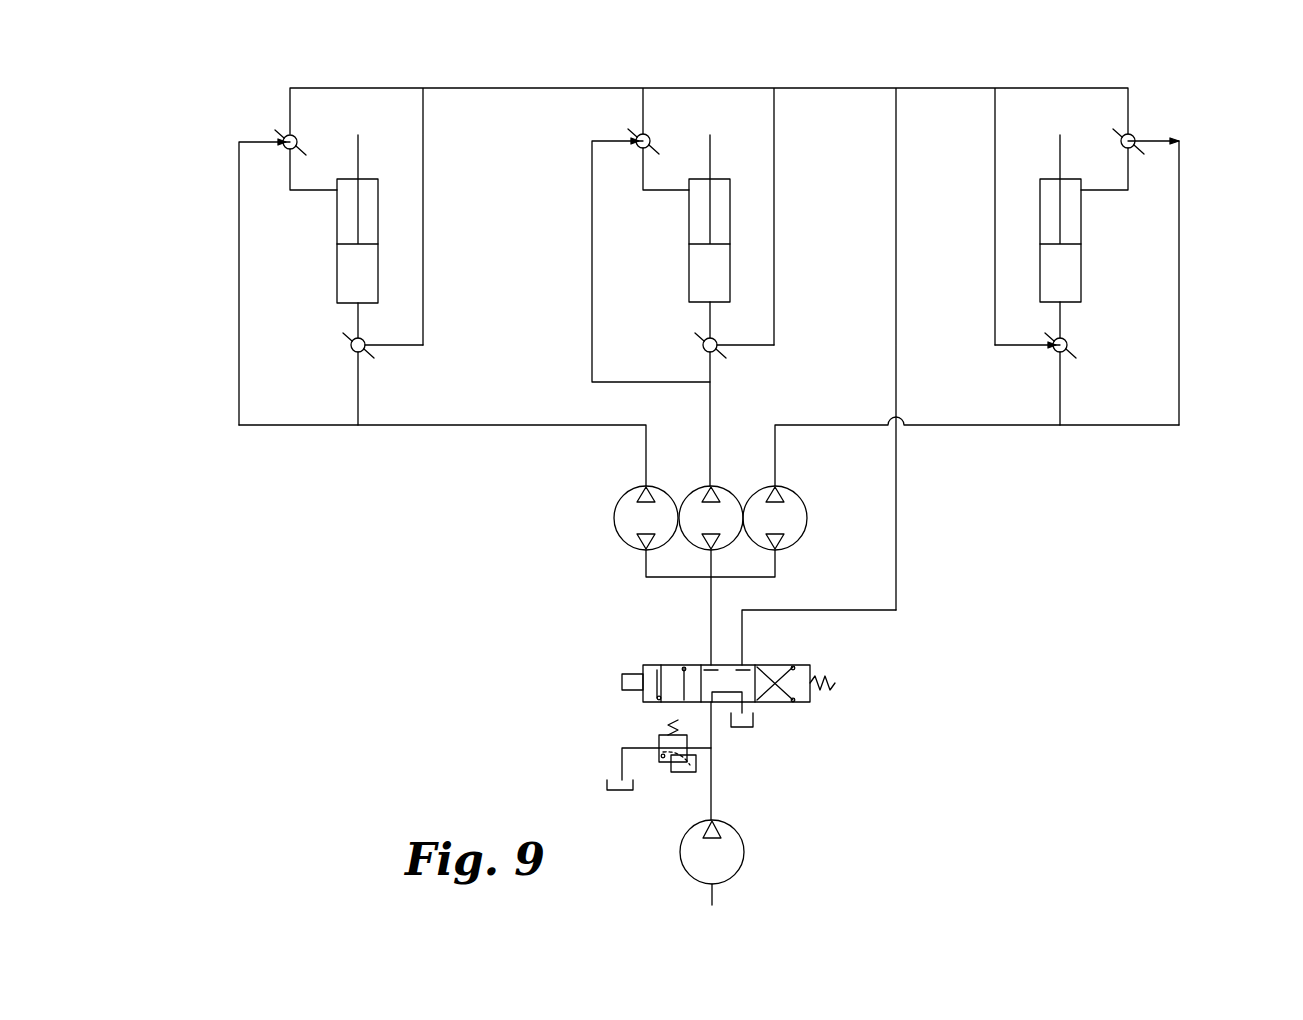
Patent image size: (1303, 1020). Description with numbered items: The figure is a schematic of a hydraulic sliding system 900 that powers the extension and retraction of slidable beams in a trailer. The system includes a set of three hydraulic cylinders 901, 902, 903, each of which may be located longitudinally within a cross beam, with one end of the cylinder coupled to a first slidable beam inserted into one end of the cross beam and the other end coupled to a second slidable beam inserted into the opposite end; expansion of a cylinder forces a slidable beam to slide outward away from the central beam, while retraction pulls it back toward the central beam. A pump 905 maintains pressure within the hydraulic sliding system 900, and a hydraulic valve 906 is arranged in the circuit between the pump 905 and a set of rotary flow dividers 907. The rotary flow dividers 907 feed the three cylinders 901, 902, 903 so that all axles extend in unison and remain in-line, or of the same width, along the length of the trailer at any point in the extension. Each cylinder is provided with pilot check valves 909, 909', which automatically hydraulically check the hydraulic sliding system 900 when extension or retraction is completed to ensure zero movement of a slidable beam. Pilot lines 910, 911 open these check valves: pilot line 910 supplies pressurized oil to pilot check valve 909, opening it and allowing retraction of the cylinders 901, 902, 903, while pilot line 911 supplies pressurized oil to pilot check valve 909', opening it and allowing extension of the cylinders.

The hydraulic sliding system 900 is at (248, 62).
The hydraulic cylinder 901 is at (333, 295).
The hydraulic cylinder 902 is at (685, 295).
The hydraulic cylinder 903 is at (1082, 287).
The pump 905 is at (732, 822).
The hydraulic valve 906 is at (803, 660).
The rotary flow dividers 907 is at (808, 522).
The pilot check valve 909 is at (750, 123).
The pilot check valve 909' is at (742, 409).
The pilot line 910 is at (423, 218).
The pilot line 911 is at (238, 283).